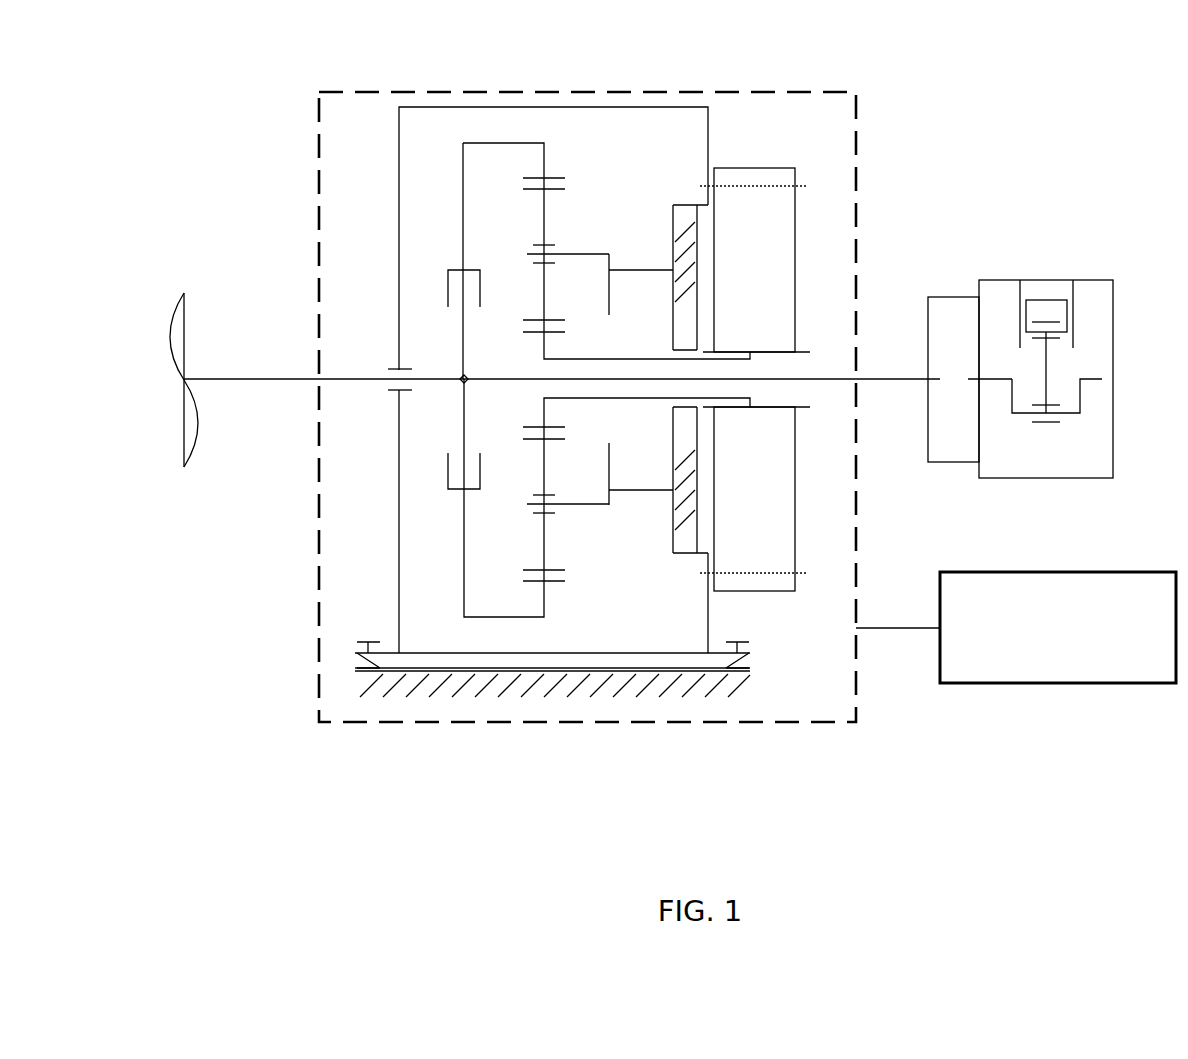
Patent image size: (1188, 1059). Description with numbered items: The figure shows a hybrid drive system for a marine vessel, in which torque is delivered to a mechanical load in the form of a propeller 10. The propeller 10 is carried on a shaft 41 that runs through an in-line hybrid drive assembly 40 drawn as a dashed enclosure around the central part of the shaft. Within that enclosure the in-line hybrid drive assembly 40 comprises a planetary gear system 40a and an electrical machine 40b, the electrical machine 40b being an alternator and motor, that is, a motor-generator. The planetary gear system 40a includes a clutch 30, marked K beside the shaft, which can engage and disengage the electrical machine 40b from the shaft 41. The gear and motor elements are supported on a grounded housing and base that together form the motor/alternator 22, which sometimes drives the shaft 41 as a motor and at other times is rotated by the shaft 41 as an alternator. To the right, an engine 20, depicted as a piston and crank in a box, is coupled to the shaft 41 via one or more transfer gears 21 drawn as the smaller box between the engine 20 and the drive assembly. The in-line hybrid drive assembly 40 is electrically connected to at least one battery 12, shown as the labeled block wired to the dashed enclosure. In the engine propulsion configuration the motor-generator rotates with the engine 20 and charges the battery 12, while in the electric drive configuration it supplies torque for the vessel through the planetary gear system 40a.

The propeller 10 is at (180, 296).
The shaft 41 is at (288, 379).
The in-line hybrid drive assembly 40 is at (345, 92).
The planetary gear system 40a is at (570, 158).
The electrical machine 40b is at (749, 213).
The clutch 30 is at (495, 488).
The motor/alternator 22 is at (670, 658).
The transfer gears 21 is at (957, 318).
The engine 20 is at (1047, 289).
The battery 12 is at (983, 577).